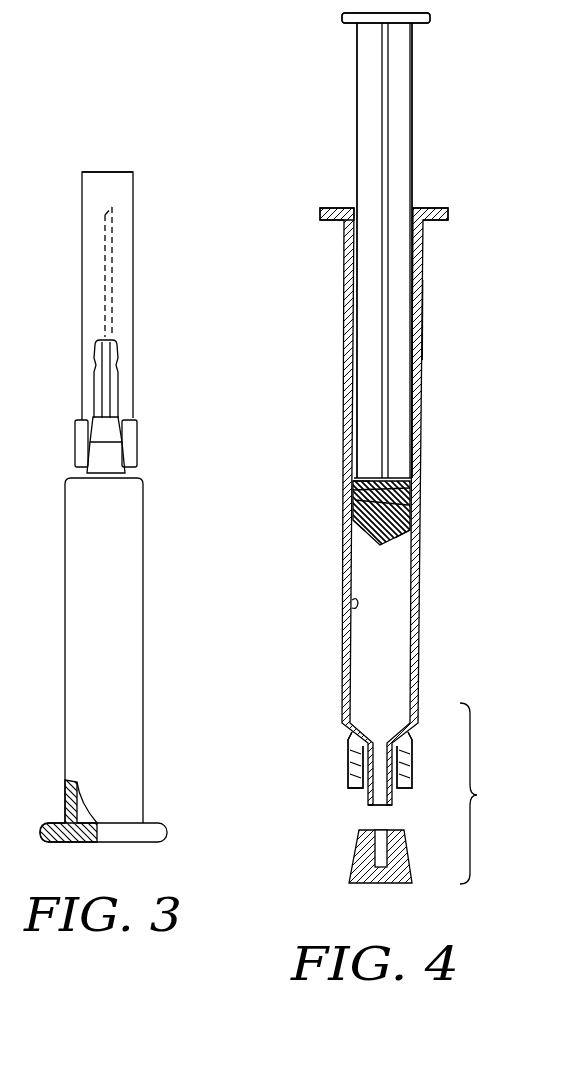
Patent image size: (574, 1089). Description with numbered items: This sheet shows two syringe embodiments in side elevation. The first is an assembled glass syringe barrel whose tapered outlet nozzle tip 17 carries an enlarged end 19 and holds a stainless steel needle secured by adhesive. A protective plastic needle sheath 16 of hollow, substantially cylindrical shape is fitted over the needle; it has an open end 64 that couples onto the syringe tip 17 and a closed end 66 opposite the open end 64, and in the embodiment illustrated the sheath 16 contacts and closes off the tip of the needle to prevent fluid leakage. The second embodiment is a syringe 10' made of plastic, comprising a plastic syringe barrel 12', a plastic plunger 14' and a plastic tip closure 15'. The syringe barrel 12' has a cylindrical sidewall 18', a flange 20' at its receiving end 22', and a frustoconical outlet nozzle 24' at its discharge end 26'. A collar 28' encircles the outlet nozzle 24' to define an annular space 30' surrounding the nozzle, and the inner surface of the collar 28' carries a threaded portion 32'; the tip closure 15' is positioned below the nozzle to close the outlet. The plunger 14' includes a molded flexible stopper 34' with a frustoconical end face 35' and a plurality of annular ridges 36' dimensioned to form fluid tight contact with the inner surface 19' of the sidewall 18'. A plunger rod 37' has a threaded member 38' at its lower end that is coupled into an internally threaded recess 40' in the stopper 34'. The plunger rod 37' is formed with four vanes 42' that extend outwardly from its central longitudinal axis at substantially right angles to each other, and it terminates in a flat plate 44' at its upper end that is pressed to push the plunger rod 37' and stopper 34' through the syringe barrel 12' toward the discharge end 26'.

In FIG. 3, the protective plastic needle sheath 16 is at (140, 210).
In FIG. 3, the closed end 66 is at (107, 171).
In FIG. 3, the enlarged end 19 is at (141, 410).
In FIG. 3, the tapered outlet nozzle tip 17 is at (110, 453).
In FIG. 3, the open end 64 is at (82, 470).
In FIG. 4, the syringe 10' is at (326, 245).
In FIG. 4, the flat plate 44' is at (425, 14).
In FIG. 4, the plastic plunger 14' is at (438, 250).
In FIG. 4, the vanes 42' is at (384, 250).
In FIG. 4, the plunger rod 37' is at (463, 250).
In FIG. 4, the receiving end 22' is at (308, 184).
In FIG. 4, the flange 20' is at (470, 238).
In FIG. 4, the cylindrical sidewall 18' is at (469, 320).
In FIG. 4, the plastic syringe barrel 12' is at (418, 506).
In FIG. 4, the threaded member 38' is at (409, 472).
In FIG. 4, the annular ridges 36' is at (418, 513).
In FIG. 4, the internally threaded recess 40' is at (331, 485).
In FIG. 4, the molded flexible stopper 34' is at (327, 542).
In FIG. 4, the frustoconical end face 35' is at (437, 549).
In FIG. 4, the inner surface 19' is at (326, 629).
In FIG. 4, the discharge end 26' is at (416, 771).
In FIG. 4, the collar 28' is at (313, 759).
In FIG. 4, the frustoconical outlet nozzle 24' is at (426, 784).
In FIG. 4, the threaded portion 32' is at (322, 789).
In FIG. 4, the annular space 30' is at (345, 829).
In FIG. 4, the plastic tip closure 15' is at (415, 880).